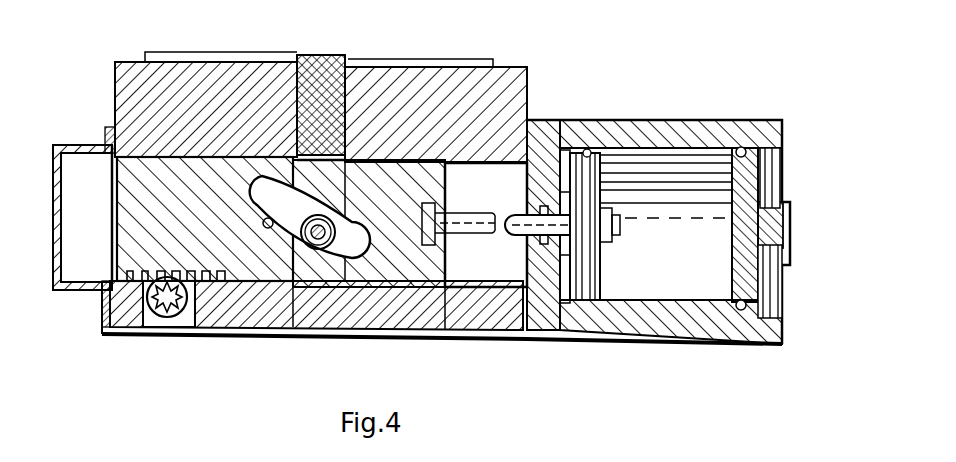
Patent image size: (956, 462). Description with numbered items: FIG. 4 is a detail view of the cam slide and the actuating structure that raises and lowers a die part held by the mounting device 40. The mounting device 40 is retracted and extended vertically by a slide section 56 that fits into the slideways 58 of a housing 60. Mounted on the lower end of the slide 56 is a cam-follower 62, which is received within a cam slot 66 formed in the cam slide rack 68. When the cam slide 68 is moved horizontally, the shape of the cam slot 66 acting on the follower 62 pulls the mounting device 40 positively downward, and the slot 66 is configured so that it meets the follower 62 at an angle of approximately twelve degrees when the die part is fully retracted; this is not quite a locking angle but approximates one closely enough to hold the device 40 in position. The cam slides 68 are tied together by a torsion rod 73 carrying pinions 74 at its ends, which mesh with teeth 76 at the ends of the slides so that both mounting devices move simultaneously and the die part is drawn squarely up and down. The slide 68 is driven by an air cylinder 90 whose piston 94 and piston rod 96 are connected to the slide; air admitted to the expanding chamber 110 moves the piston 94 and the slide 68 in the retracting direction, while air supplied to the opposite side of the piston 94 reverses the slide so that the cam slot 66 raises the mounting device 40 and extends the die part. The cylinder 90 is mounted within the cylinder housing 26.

The cylinder housing 26 is at (697, 347).
The mounting device 40 is at (407, 59).
The slide section 56 is at (313, 62).
The slideways 58 is at (298, 85).
The housing 60 is at (533, 72).
The cam-follower 62 is at (336, 217).
The cam slot 66 is at (273, 227).
The cam slide rack 68 is at (173, 217).
The torsion rod 73 is at (168, 320).
The pinion 74 is at (177, 318).
The teeth 76 is at (112, 278).
The air cylinder 90 is at (642, 303).
The piston 94 is at (605, 263).
The piston rod 96 is at (508, 237).
The expanding chamber 110 is at (665, 254).